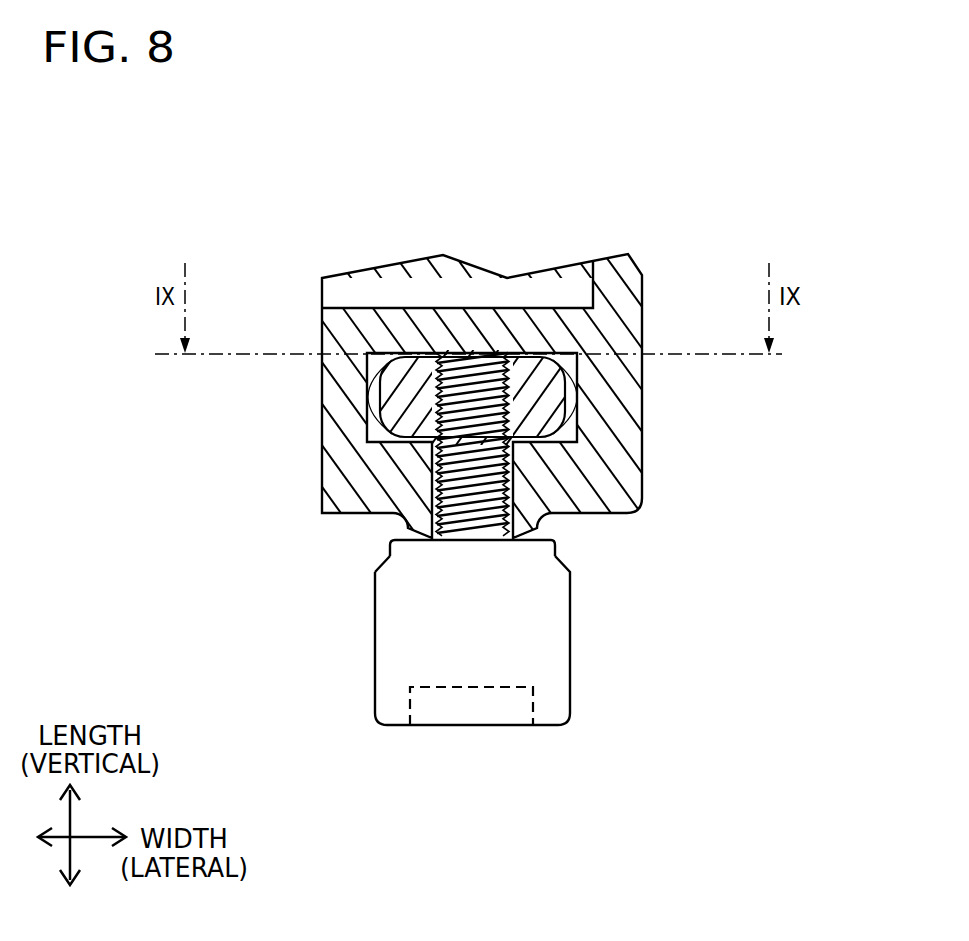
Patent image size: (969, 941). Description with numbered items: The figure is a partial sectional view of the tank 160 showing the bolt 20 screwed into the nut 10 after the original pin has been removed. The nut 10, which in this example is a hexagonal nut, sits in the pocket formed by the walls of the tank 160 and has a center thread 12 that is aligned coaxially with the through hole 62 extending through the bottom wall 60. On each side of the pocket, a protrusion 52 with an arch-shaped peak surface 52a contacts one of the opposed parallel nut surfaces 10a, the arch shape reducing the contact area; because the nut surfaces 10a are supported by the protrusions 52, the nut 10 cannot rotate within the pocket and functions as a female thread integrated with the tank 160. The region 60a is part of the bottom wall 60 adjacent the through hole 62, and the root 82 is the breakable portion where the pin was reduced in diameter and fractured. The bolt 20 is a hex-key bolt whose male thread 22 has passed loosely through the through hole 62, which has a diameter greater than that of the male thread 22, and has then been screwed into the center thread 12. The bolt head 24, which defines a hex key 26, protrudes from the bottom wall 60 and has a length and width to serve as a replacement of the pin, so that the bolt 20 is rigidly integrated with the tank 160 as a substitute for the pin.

The tank 160 is at (677, 181).
The nut 10 is at (558, 340).
The nut surface 10a is at (370, 421).
The center thread 12 is at (428, 392).
The protrusion 52 is at (390, 407).
The peak surface 52a is at (372, 377).
The bottom wall 60 is at (548, 470).
The left protrusion of holding member 60a is at (387, 440).
The through hole 62 is at (518, 500).
The bolt 20 is at (690, 566).
The male thread 22 is at (557, 543).
The bolt head 24 is at (570, 645).
The hex key 26 is at (470, 687).
The root 82 is at (388, 545).